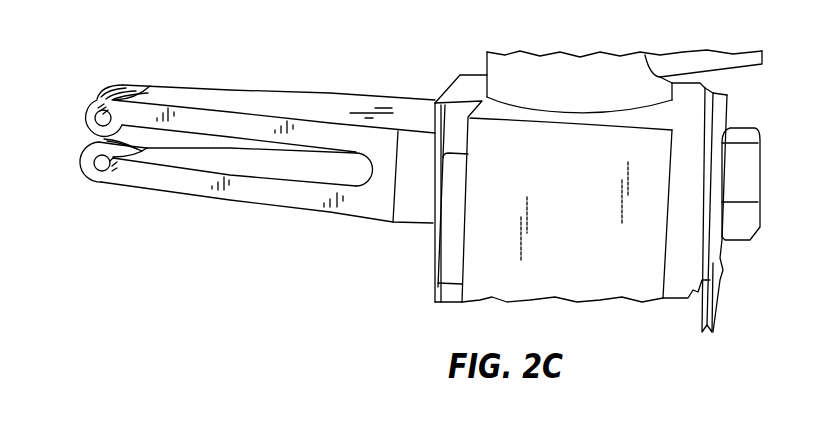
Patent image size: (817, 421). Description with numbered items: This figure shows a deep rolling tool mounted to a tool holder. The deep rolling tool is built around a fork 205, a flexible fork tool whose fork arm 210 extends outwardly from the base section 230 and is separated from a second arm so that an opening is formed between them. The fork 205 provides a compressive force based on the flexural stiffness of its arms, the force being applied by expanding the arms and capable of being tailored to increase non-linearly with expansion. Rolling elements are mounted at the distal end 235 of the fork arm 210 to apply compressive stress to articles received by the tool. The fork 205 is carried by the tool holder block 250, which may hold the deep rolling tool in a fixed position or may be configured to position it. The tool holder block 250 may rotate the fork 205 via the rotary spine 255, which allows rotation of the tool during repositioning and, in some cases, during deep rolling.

The fork 205 is at (435, 102).
The fork arm 210 is at (257, 97).
The base section 230 is at (363, 92).
The distal end 235 is at (151, 84).
The tool holder block 250 is at (703, 90).
The rotary spine 255 is at (745, 126).